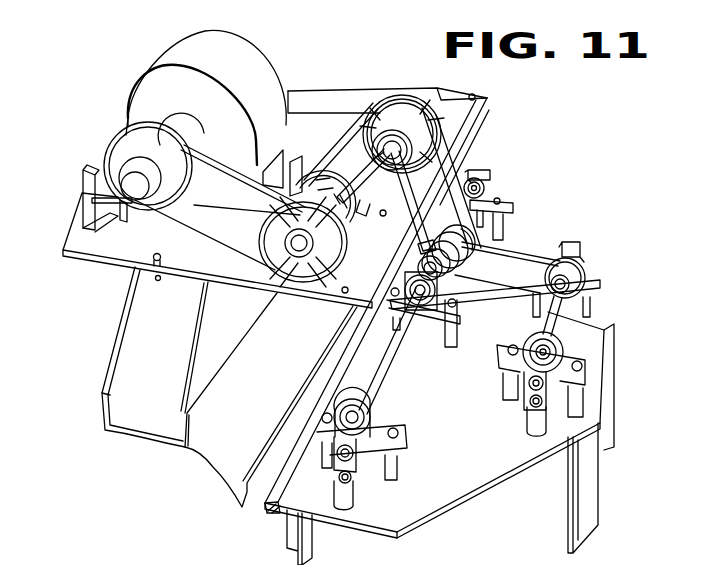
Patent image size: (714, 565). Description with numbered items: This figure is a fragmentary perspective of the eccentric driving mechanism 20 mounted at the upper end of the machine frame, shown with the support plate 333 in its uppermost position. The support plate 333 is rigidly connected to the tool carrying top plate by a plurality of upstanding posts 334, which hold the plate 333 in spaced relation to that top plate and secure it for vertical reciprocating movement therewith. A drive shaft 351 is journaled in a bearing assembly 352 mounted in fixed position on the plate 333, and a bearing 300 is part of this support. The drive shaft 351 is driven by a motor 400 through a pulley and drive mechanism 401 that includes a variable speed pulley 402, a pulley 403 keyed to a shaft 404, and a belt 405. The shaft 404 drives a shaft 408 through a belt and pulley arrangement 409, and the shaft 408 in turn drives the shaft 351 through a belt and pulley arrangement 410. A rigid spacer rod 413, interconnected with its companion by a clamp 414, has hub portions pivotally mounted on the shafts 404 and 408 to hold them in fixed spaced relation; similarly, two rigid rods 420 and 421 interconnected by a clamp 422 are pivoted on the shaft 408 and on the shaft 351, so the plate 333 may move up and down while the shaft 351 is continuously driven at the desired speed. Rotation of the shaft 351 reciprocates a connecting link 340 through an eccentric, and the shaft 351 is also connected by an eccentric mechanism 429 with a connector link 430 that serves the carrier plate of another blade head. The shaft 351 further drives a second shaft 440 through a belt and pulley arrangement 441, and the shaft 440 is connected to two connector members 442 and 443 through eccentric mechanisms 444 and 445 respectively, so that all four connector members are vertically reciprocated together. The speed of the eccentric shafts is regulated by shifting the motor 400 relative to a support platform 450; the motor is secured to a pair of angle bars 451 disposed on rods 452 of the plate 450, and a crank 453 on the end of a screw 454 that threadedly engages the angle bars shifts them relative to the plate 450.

The apparatus assembly 20 is at (498, 93).
The bearing 300 is at (503, 198).
The support plate 333 is at (470, 425).
The upstanding posts 334 is at (310, 543).
The connecting link 340 is at (490, 173).
The drive shaft 351 is at (500, 218).
The bearing assembly 352 is at (493, 187).
The motor 400 is at (193, 104).
The pulley and drive mechanism 401 is at (234, 160).
The variable speed pulley 402 is at (125, 150).
The pulley 403 is at (292, 262).
The shaft 404 is at (297, 245).
The belt 405 is at (205, 231).
The shaft 408 is at (390, 144).
The belt and pulley arrangement 409 is at (343, 120).
The belt and pulley arrangement 410 is at (484, 230).
The rigid spacer rod 413 is at (363, 206).
The clamp 414 is at (352, 182).
The rigid rod 420 is at (437, 200).
The rigid rod 421 is at (408, 222).
The clamp 422 is at (455, 188).
The eccentric mechanism 429 is at (382, 426).
The connector link 430 is at (352, 466).
The second shaft 440 is at (557, 317).
The belt and pulley arrangement 441 is at (512, 298).
The connector member 442 is at (585, 247).
The connector member 443 is at (552, 396).
The eccentric mechanism 444 is at (588, 262).
The eccentric mechanism 445 is at (550, 357).
The support platform 450 is at (96, 250).
The angle bars 451 is at (200, 262).
The rods 452 is at (97, 203).
The crank 453 is at (100, 170).
The screw 454 is at (100, 182).